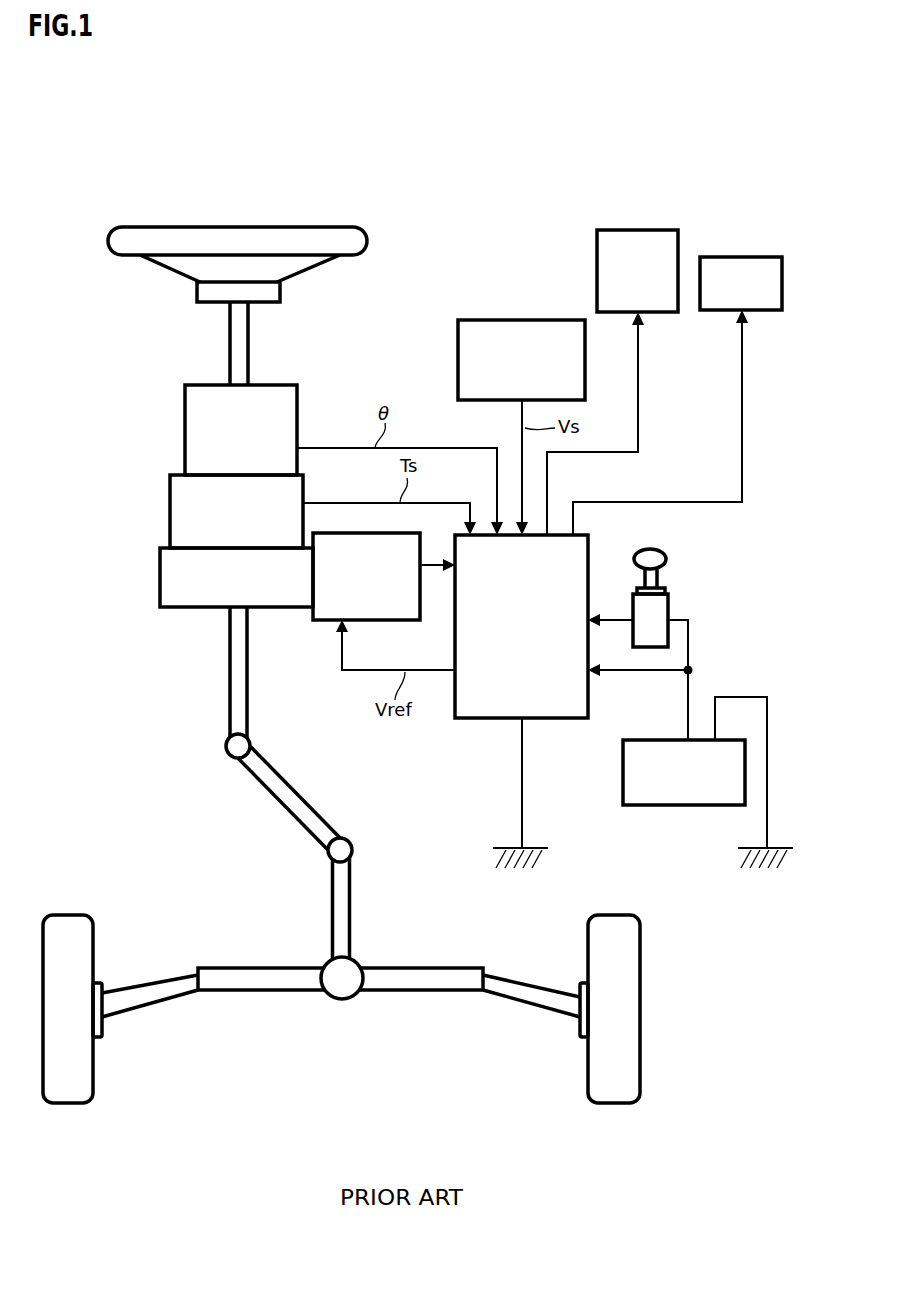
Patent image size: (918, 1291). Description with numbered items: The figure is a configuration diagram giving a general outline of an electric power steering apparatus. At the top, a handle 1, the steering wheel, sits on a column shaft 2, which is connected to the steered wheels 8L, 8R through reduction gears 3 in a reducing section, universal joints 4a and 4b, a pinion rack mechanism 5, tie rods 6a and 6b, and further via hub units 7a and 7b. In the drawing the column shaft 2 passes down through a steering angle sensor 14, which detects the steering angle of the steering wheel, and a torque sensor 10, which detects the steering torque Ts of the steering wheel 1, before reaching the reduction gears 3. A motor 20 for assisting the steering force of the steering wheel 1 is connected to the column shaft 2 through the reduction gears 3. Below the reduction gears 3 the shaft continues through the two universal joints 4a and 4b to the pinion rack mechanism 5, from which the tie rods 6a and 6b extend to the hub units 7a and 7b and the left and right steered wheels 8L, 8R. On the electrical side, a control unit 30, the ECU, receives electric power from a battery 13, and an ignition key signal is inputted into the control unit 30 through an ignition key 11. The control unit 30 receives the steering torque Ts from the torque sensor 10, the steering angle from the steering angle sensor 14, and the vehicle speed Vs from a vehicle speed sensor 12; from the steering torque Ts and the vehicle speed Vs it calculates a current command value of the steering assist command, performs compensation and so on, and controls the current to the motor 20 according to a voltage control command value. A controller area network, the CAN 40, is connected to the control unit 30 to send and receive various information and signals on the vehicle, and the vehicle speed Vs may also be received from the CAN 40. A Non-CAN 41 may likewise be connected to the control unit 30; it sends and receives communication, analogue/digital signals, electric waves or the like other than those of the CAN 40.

The handle 1 is at (367, 233).
The column shaft 2 is at (229, 348).
The reduction gears 3 is at (160, 575).
The universal joint 4a is at (226, 756).
The universal joint 4b is at (328, 858).
The pinion rack mechanism 5 is at (357, 961).
The tie rod 6a is at (130, 985).
The tie rod 6b is at (512, 978).
The hub unit 7a is at (105, 1033).
The hub unit 7b is at (578, 1032).
The steered wheel 8L is at (92, 1092).
The steered wheel 8R is at (589, 1092).
The torque sensor 10 is at (170, 505).
The ignition key 11 is at (668, 556).
The vehicle speed sensor 12 is at (507, 320).
The battery 13 is at (623, 763).
The steering angle sensor 14 is at (185, 442).
The motor 20 is at (385, 620).
The control unit 30 is at (590, 537).
The controller area network 40 is at (766, 257).
The Non-CAN 41 is at (666, 230).